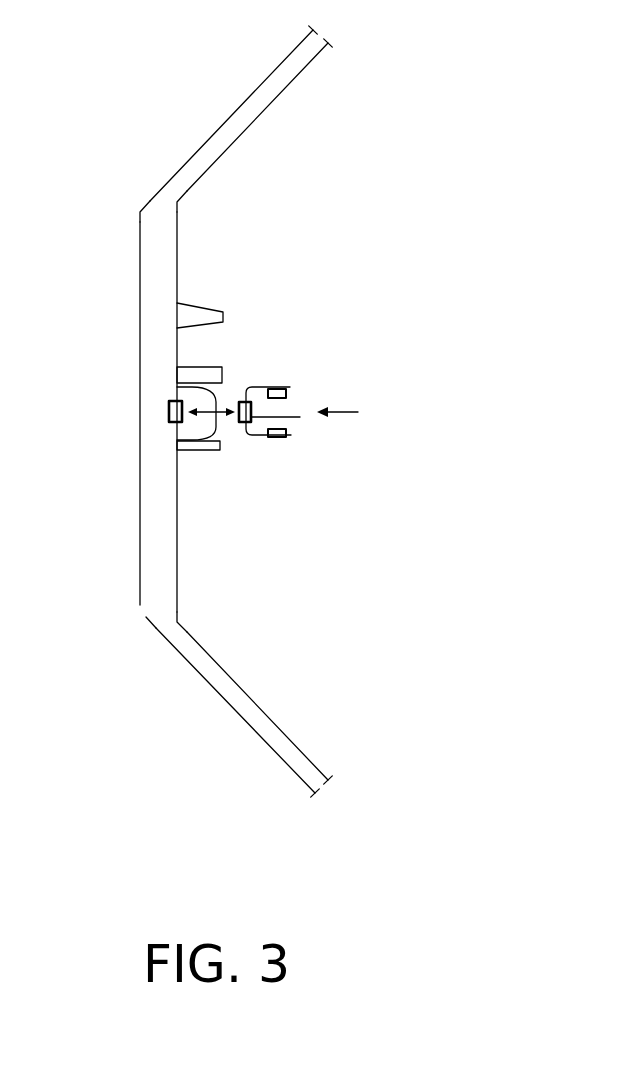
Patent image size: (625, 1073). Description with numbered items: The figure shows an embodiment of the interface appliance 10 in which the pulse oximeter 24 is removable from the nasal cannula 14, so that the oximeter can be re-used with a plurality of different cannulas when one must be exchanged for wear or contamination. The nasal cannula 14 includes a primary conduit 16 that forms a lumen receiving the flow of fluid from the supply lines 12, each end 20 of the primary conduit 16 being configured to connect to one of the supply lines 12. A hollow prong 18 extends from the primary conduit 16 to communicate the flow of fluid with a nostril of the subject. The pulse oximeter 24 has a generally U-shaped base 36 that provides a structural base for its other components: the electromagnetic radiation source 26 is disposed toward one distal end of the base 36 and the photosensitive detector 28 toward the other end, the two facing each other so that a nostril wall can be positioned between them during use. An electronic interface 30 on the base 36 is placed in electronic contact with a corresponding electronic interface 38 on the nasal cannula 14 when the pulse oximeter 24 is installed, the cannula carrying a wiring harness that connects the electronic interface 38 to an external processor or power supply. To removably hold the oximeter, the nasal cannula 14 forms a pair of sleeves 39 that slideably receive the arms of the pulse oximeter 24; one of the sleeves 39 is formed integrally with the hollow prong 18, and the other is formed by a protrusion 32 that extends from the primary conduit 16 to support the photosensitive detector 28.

The interface appliance 10 is at (462, 179).
The supply line 12 is at (288, 72).
The nasal cannula 14 is at (140, 287).
The primary conduit 16 is at (148, 392).
The hollow prong 18 is at (220, 367).
The end of primary conduit 20 is at (223, 131).
The pulse oximeter 24 is at (358, 414).
The electromagnetic radiation source 26 is at (290, 389).
The photosensitive detector 28 is at (287, 438).
The electronic interface 30 is at (300, 417).
The protrusion 32 is at (208, 447).
The base 36 is at (261, 435).
The electronic interface on nasal cannula 38 is at (170, 422).
The sleeve 39 is at (222, 388).